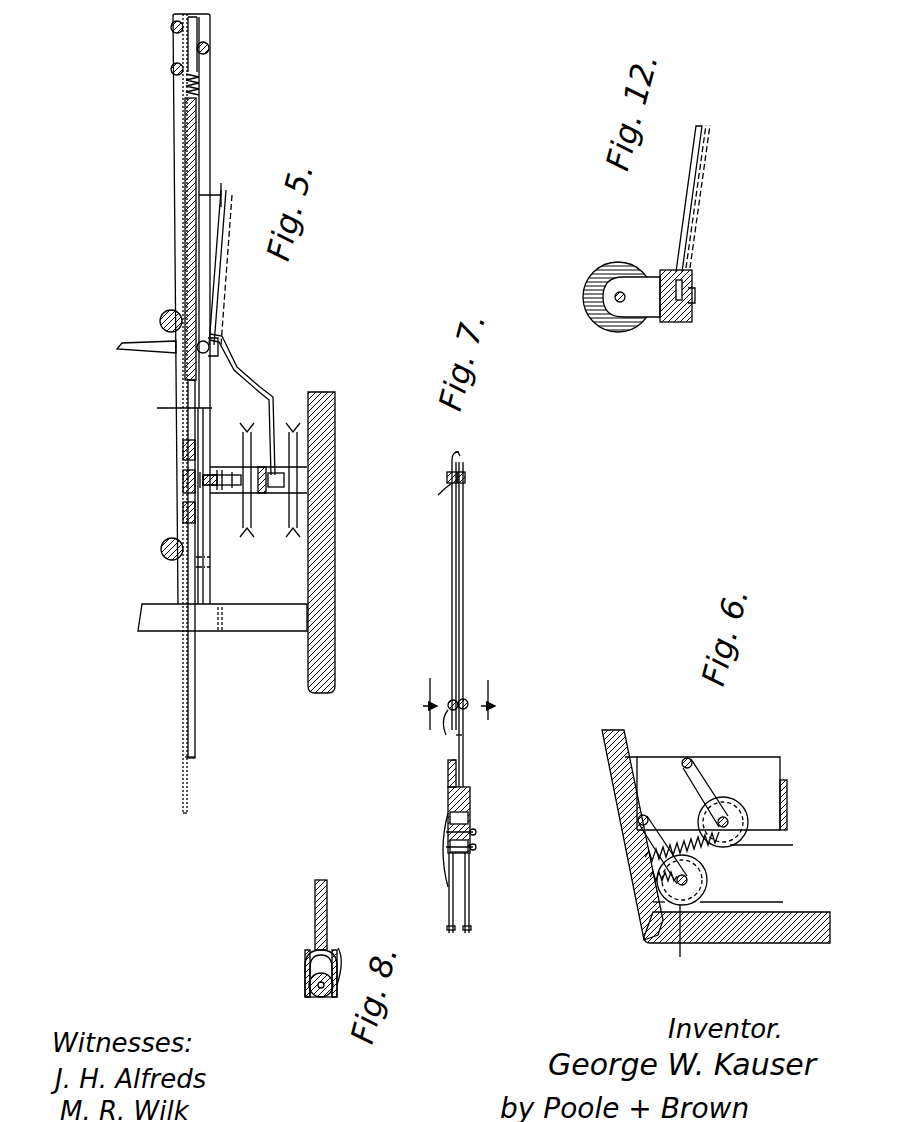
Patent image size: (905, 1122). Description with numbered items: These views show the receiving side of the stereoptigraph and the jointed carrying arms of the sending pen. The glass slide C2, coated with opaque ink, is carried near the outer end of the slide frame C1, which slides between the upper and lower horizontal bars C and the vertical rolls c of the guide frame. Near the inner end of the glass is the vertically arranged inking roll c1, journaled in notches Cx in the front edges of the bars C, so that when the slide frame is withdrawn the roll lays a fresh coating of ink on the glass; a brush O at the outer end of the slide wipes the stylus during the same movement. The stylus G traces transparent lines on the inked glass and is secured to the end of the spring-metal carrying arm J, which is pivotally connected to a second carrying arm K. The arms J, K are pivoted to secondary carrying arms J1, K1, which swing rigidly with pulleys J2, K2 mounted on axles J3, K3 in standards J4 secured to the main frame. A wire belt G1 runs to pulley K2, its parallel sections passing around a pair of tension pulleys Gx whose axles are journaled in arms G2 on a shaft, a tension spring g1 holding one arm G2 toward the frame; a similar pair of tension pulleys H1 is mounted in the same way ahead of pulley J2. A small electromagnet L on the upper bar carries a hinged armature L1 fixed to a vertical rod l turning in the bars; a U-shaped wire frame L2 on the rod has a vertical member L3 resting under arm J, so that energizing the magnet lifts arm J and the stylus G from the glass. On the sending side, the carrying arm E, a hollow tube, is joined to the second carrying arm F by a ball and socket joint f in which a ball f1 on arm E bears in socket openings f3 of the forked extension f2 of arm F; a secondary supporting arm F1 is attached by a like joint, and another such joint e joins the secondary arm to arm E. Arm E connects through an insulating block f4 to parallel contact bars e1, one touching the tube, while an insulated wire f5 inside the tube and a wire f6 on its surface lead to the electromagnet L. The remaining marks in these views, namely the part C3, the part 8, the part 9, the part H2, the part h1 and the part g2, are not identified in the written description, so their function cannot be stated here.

In FIG. 5, the horizontal bar C is at (172, 597).
In FIG. 6, the horizontal bar C is at (789, 783).
In FIG. 5, the slide frame C1 is at (183, 683).
In FIG. 5, the glass slide C2 is at (198, 556).
In FIG. 5, the slide bar C3 is at (188, 215).
In FIG. 5, the vertical roll c is at (197, 48).
In FIG. 5, the inking roll c1 is at (176, 352).
In FIG. 5, the notch Cx is at (212, 346).
In FIG. 5, the brush O is at (200, 88).
In FIG. 5, the stylus G is at (214, 192).
In FIG. 6, the wire belt G1 is at (627, 760).
In FIG. 6, the arm G2 is at (648, 850).
In FIG. 6, the tension pulley Gx is at (680, 944).
In FIG. 12, the electromagnet L is at (590, 290).
In FIG. 12, the armature L1 is at (678, 325).
In FIG. 5, the U-shaped wire frame L2 is at (210, 300).
In FIG. 12, the U-shaped wire frame L2 is at (690, 236).
In FIG. 5, the vertical member L3 is at (215, 246).
In FIG. 12, the vertical member L3 is at (700, 132).
In FIG. 12, the vertical rod l is at (684, 292).
In FIG. 5, the carrying arm K is at (228, 334).
In FIG. 5, the secondary carrying arm K1 is at (242, 370).
In FIG. 5, the rotary member K2 is at (290, 508).
In FIG. 5, the axle K3 is at (285, 478).
In FIG. 5, the carrying arm J is at (166, 414).
In FIG. 5, the secondary carrying arm J1 is at (220, 488).
In FIG. 5, the rotary member J2 is at (243, 465).
In FIG. 5, the axle J3 is at (252, 606).
In FIG. 5, the standard J4 is at (262, 495).
In FIG. 5, the wall A is at (334, 394).
In FIG. 6, the wall A is at (758, 948).
In FIG. 7, the carrying arm F is at (450, 702).
In FIG. 8, the carrying arm F is at (315, 900).
In FIG. 7, the secondary supporting arm F1 is at (455, 464).
In FIG. 7, the ball and socket joint f is at (474, 848).
In FIG. 7, the ball f1 is at (463, 732).
In FIG. 8, the ball f1 is at (320, 1000).
In FIG. 7, the forked extension f2 is at (468, 706).
In FIG. 8, the forked extension f2 is at (306, 966).
In FIG. 7, the socket opening f3 is at (448, 712).
In FIG. 8, the socket opening f3 is at (340, 980).
In FIG. 7, the insulating block f4 is at (476, 832).
In FIG. 7, the insulated wire f5 is at (452, 453).
In FIG. 7, the wire f6 is at (438, 490).
In FIG. 7, the ball and socket joint e is at (464, 466).
In FIG. 7, the contact bar e1 is at (449, 910).
In FIG. 7, the carrying arm E is at (452, 770).
In FIG. 8, the carrying arm E is at (325, 1002).
In FIG. 7, the pin 8 is at (458, 704).
In FIG. 6, the spring 9 is at (640, 823).
In FIG. 6, the frame box H is at (690, 757).
In FIG. 6, the tension pulley H1 is at (726, 848).
In FIG. 6, the arm H2 is at (710, 795).
In FIG. 6, the pivot h is at (684, 760).
In FIG. 6, the lower arm h1 is at (664, 837).
In FIG. 6, the tension spring g1 is at (650, 877).
In FIG. 6, the bar g2 is at (653, 902).